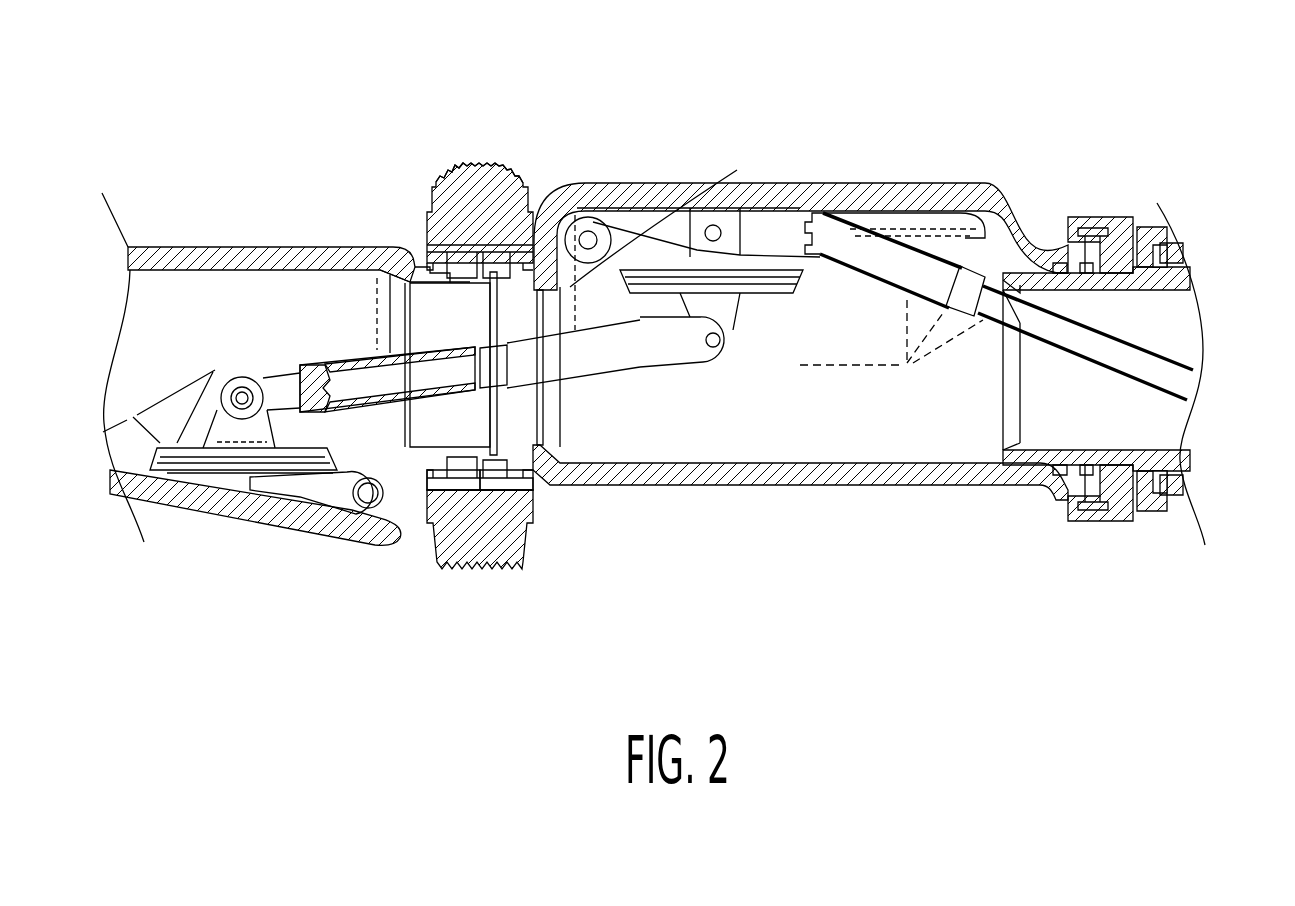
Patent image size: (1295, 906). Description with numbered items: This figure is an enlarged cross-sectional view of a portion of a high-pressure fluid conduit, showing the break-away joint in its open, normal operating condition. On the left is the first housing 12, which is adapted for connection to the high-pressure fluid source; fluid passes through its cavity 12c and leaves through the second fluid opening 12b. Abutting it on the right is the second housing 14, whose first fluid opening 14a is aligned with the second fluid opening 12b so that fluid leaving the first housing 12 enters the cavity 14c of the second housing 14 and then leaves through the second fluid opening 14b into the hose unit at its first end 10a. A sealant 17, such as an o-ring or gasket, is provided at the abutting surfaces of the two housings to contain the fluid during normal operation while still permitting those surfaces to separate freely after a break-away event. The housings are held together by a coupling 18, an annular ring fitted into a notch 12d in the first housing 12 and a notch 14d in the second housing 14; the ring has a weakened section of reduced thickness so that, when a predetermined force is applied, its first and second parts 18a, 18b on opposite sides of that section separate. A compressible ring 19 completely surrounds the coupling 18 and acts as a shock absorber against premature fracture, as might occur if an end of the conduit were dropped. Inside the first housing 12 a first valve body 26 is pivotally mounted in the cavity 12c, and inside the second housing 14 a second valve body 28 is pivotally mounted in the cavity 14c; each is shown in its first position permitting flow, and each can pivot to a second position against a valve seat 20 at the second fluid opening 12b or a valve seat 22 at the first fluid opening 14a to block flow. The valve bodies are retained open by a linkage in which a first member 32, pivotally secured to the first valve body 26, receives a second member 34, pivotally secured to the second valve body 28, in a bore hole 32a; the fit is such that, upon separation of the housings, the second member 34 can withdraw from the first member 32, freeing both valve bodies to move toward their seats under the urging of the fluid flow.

The first end of hose unit 10a is at (1153, 295).
The first housing 12 is at (213, 246).
The second fluid opening 12b is at (347, 500).
The cavity 12c is at (192, 330).
The notch 12d is at (430, 266).
The second housing 14 is at (793, 186).
The first fluid opening 14a is at (617, 222).
The second fluid opening 14b is at (1003, 393).
The cavity 14c is at (842, 432).
The notch 14d is at (535, 462).
The sealant 17 is at (548, 278).
The coupling 18 is at (497, 238).
The first part of annular ring 18a is at (415, 472).
The second part of annular ring 18b is at (483, 477).
The compressible ring 19 is at (470, 166).
The valve seat 20 is at (400, 262).
The valve seat 22 is at (545, 462).
The first valve body 26 is at (175, 505).
The second valve body 28 is at (740, 218).
The first member of linkage 32 is at (338, 373).
The bore hole 32a is at (372, 360).
The second member of linkage 34 is at (607, 333).